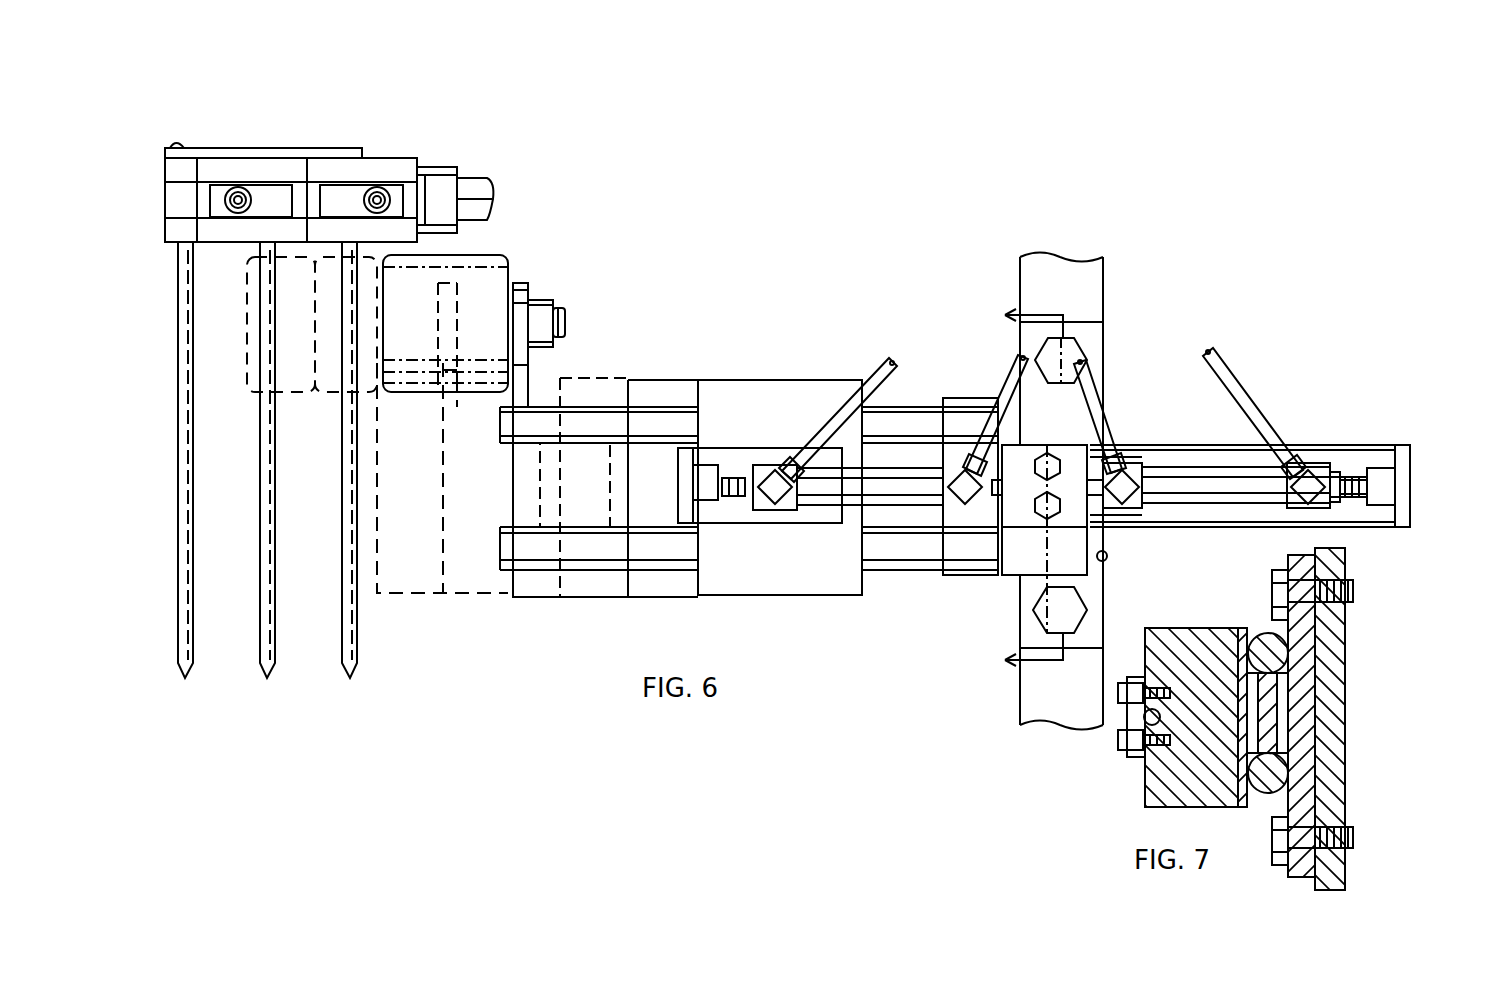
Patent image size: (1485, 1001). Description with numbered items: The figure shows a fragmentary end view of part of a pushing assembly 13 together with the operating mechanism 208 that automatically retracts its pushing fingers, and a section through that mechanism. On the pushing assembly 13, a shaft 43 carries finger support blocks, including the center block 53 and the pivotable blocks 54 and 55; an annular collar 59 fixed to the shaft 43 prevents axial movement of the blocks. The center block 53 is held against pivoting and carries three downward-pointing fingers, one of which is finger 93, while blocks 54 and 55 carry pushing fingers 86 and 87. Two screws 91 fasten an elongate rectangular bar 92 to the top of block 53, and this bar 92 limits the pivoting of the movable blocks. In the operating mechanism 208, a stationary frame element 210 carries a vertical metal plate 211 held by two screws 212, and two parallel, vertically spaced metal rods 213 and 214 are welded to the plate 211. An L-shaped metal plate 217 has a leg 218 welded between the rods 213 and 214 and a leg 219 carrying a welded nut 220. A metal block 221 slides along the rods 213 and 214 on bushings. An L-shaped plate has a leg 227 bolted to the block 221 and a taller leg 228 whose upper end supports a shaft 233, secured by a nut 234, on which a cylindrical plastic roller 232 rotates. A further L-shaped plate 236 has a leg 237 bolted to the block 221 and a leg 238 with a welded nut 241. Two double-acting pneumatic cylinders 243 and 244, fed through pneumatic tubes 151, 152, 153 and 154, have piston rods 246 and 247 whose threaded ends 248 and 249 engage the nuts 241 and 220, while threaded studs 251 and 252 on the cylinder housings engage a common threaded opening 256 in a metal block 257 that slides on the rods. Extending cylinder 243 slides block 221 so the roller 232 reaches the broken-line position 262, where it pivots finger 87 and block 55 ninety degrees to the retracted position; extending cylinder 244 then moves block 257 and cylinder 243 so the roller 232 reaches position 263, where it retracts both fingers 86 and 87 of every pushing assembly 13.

In FIG. 6, the pushing assembly 13 is at (324, 152).
In FIG. 6, the shaft 43 is at (475, 186).
In FIG. 6, the center block 53 is at (175, 170).
In FIG. 6, the finger support block 54 is at (243, 168).
In FIG. 6, the finger support block 55 is at (388, 168).
In FIG. 6, the annular collar 59 is at (437, 168).
In FIG. 6, the screws 91 is at (178, 146).
In FIG. 6, the elongate rectangular bar 92 is at (282, 152).
In FIG. 6, the pushing finger 86 is at (268, 650).
In FIG. 6, the pushing finger 87 is at (352, 650).
In FIG. 6, the pushing finger 93 is at (188, 650).
In FIG. 6, the pneumatic tube 151 is at (848, 390).
In FIG. 6, the pneumatic tube 152 is at (1012, 385).
In FIG. 6, the pneumatic tube 153 is at (1087, 392).
In FIG. 6, the pneumatic tube 154 is at (1232, 380).
In FIG. 6, the positioning mechanism 208 is at (749, 417).
In FIG. 6, the stationary frame element 210 is at (1087, 273).
In FIG. 7, the stationary frame element 210 is at (1330, 872).
In FIG. 6, the vertical metal plate 211 is at (1087, 325).
In FIG. 7, the vertical metal plate 211 is at (1300, 880).
In FIG. 6, the screws 212 is at (1072, 348).
In FIG. 7, the screws 212 is at (1355, 838).
In FIG. 6, the metal rod 213 is at (665, 405).
In FIG. 7, the metal rod 213 is at (1265, 640).
In FIG. 6, the metal rod 214 is at (640, 548).
In FIG. 7, the metal rod 214 is at (1268, 785).
In FIG. 6, the L-shaped metal plate 217 is at (1265, 458).
In FIG. 7, the L-shaped metal plate 217 is at (1270, 695).
In FIG. 6, the leg 218 is at (1145, 450).
In FIG. 7, the leg 218 is at (1268, 720).
In FIG. 6, the leg 219 is at (1402, 448).
In FIG. 6, the nut 220 is at (1382, 500).
In FIG. 6, the metal block 221 is at (770, 395).
In FIG. 6, the leg 227 is at (525, 480).
In FIG. 6, the leg 228 is at (521, 380).
In FIG. 6, the cylindrical plastic roller 232 is at (505, 265).
In FIG. 6, the shaft 233 is at (565, 318).
In FIG. 6, the nut 234 is at (548, 302).
In FIG. 6, the L-shaped plate 236 is at (735, 462).
In FIG. 6, the leg 237 is at (820, 518).
In FIG. 6, the leg 238 is at (676, 484).
In FIG. 6, the nut 241 is at (700, 500).
In FIG. 6, the double-acting pneumatic cylinder 243 is at (885, 487).
In FIG. 6, the double-acting pneumatic cylinder 244 is at (1210, 505).
In FIG. 6, the piston rod 246 is at (738, 496).
In FIG. 6, the piston rod 247 is at (1352, 500).
In FIG. 6, the threaded end 248 is at (718, 497).
In FIG. 6, the threaded end 249 is at (1352, 468).
In FIG. 6, the threaded stud 251 is at (985, 500).
In FIG. 6, the threaded stud 252 is at (1100, 540).
In FIG. 7, the threaded opening 256 is at (1118, 725).
In FIG. 6, the metal block 257 is at (1018, 560).
In FIG. 7, the metal block 257 is at (1150, 798).
In FIG. 6, the roller position 262 is at (316, 392).
In FIG. 6, the roller position 263 is at (244, 395).